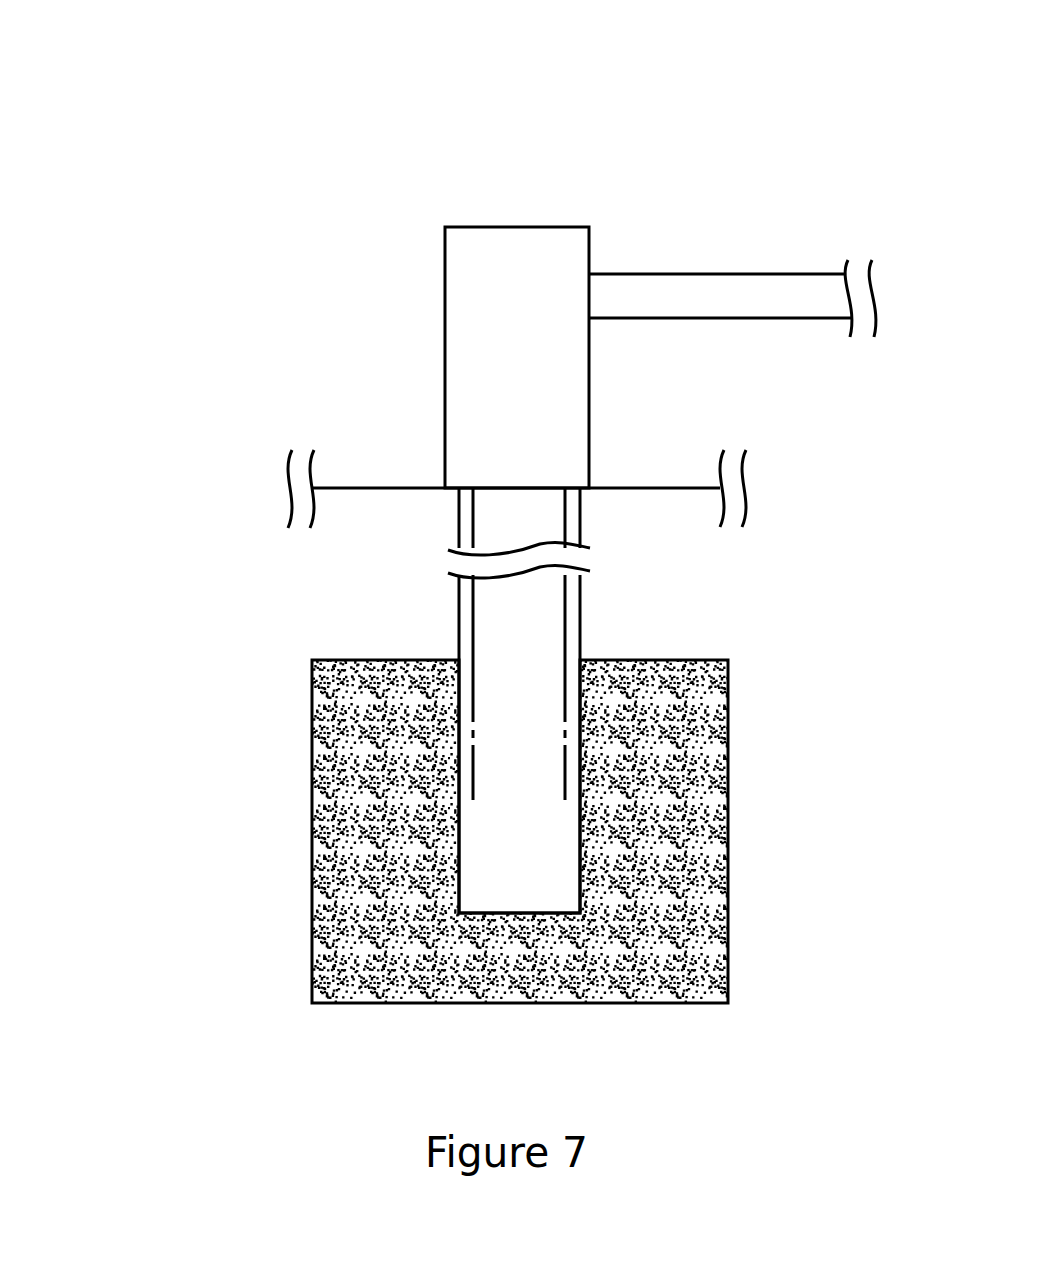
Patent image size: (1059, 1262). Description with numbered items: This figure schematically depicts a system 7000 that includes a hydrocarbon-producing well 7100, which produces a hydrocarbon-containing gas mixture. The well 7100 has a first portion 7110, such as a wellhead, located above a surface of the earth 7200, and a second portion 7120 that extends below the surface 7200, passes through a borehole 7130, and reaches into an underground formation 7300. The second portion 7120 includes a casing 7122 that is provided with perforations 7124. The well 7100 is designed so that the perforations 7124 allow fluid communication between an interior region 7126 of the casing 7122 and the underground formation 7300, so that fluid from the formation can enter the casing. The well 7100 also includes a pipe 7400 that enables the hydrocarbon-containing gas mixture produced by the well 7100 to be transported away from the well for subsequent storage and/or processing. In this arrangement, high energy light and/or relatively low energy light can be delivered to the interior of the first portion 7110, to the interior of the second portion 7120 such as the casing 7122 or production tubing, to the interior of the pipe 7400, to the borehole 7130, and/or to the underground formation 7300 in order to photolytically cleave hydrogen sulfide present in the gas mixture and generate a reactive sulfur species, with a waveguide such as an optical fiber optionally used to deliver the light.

The system 7000 is at (790, 84).
The hydrocarbon-producing well 7100 is at (286, 319).
The first portion 7110 is at (445, 276).
The second portion 7120 is at (398, 577).
The casing 7122 is at (566, 603).
The perforations 7124 is at (566, 723).
The interior region 7126 is at (529, 648).
The borehole 7130 is at (465, 620).
The surface of the earth 7200 is at (630, 488).
The underground formation 7300 is at (136, 762).
The pipe 7400 is at (733, 274).